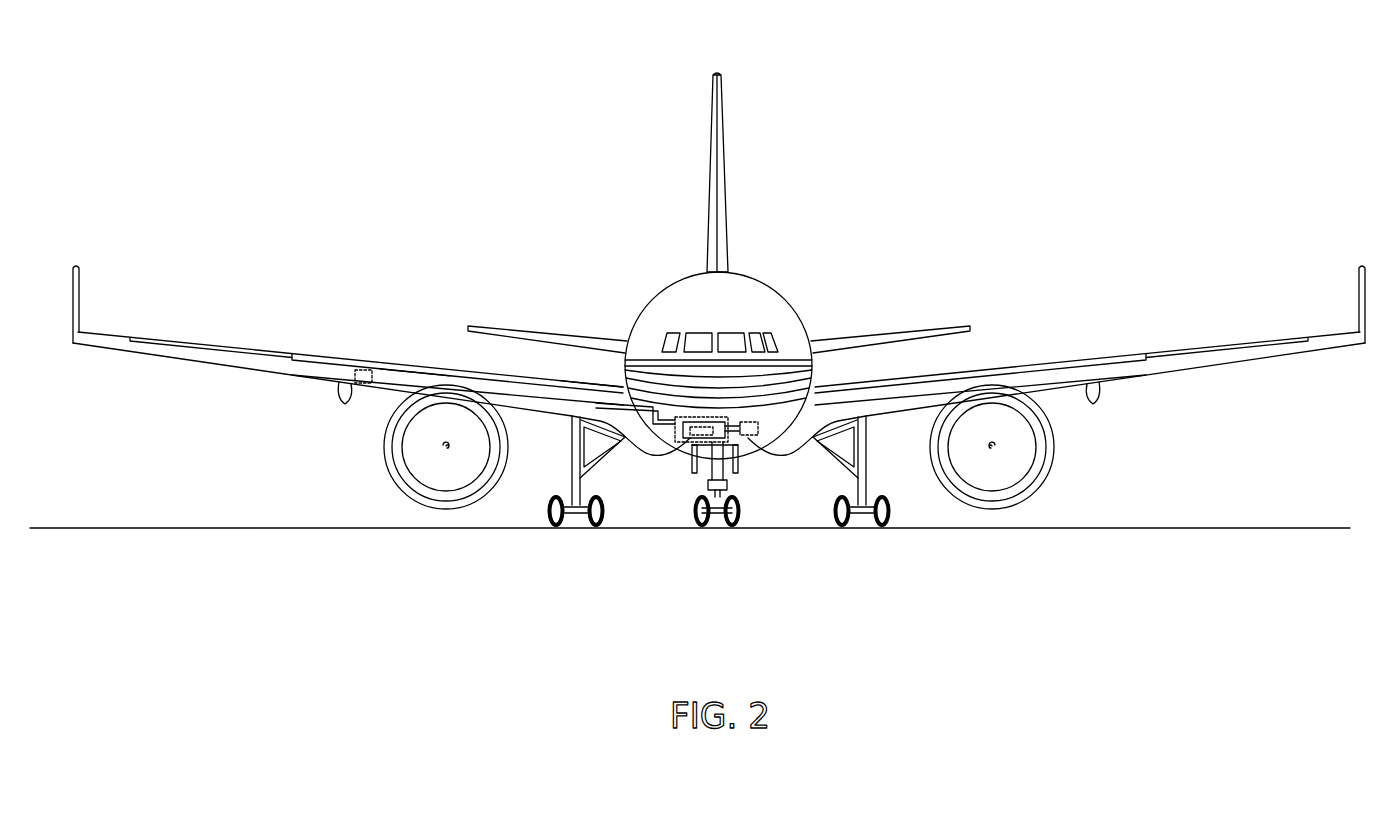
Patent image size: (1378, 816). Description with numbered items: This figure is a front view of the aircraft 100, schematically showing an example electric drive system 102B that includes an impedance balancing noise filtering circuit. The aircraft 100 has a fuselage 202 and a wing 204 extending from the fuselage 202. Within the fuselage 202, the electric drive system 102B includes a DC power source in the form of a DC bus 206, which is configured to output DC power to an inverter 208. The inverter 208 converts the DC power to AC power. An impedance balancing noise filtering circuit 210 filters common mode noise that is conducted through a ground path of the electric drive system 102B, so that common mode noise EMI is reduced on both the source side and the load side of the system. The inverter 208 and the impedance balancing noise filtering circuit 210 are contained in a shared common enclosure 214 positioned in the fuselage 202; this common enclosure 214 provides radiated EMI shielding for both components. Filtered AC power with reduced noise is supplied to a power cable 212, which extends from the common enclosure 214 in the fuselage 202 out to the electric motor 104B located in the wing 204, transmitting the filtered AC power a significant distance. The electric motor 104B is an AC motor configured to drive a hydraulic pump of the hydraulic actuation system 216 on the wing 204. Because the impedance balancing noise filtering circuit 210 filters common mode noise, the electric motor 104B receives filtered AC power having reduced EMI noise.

The aircraft 100 is at (1091, 156).
The fuselage 202 is at (752, 272).
The wing 204 is at (212, 338).
The hydraulic actuation system 216 is at (413, 372).
The power cable 212 is at (602, 389).
The electric motor 104B is at (372, 390).
The electric drive system 102B is at (773, 418).
The common enclosure 214 is at (680, 447).
The DC bus 206 is at (762, 440).
The inverter 208 is at (692, 448).
The impedance balancing noise filtering circuit 210 is at (736, 456).